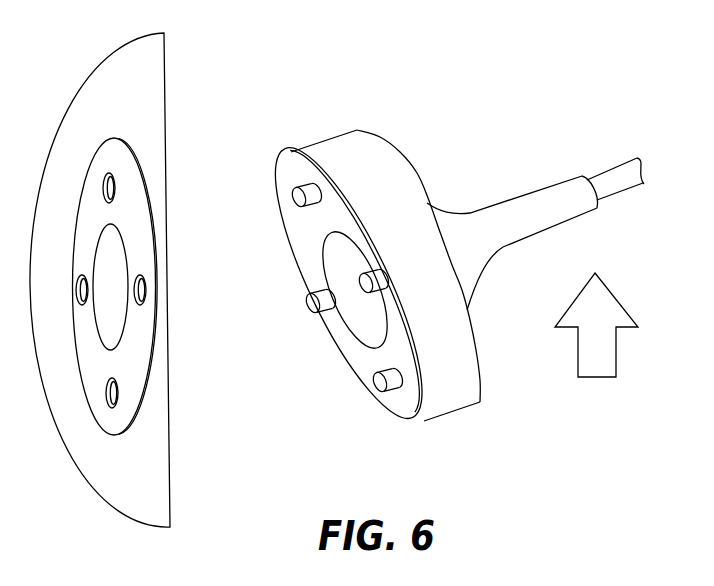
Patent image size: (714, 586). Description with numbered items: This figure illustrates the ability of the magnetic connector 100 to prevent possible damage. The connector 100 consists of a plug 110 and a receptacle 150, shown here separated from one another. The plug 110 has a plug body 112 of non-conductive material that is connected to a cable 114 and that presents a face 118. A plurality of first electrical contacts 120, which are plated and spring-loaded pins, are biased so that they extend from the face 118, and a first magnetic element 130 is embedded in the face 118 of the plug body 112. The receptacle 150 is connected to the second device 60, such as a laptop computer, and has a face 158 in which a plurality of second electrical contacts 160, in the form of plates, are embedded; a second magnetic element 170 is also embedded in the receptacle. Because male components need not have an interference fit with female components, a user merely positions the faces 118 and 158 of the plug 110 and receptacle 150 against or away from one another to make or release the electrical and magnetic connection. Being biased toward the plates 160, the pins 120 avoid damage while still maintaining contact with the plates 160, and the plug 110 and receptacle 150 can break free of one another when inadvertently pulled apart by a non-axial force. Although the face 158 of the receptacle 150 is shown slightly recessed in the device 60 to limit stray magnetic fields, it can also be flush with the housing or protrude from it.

The second device 60 is at (166, 94).
The magnetic connector 100 is at (612, 72).
The plug 110 is at (471, 147).
The plug body 112 is at (368, 132).
The cable 114 is at (623, 155).
The face 118 is at (393, 413).
The first electrical contacts 120 is at (307, 310).
The first magnetic element 130 is at (373, 349).
The receptacle 150 is at (185, 434).
The face 158 is at (133, 362).
The second electrical contacts 160 is at (143, 286).
The second magnetic element 170 is at (127, 258).